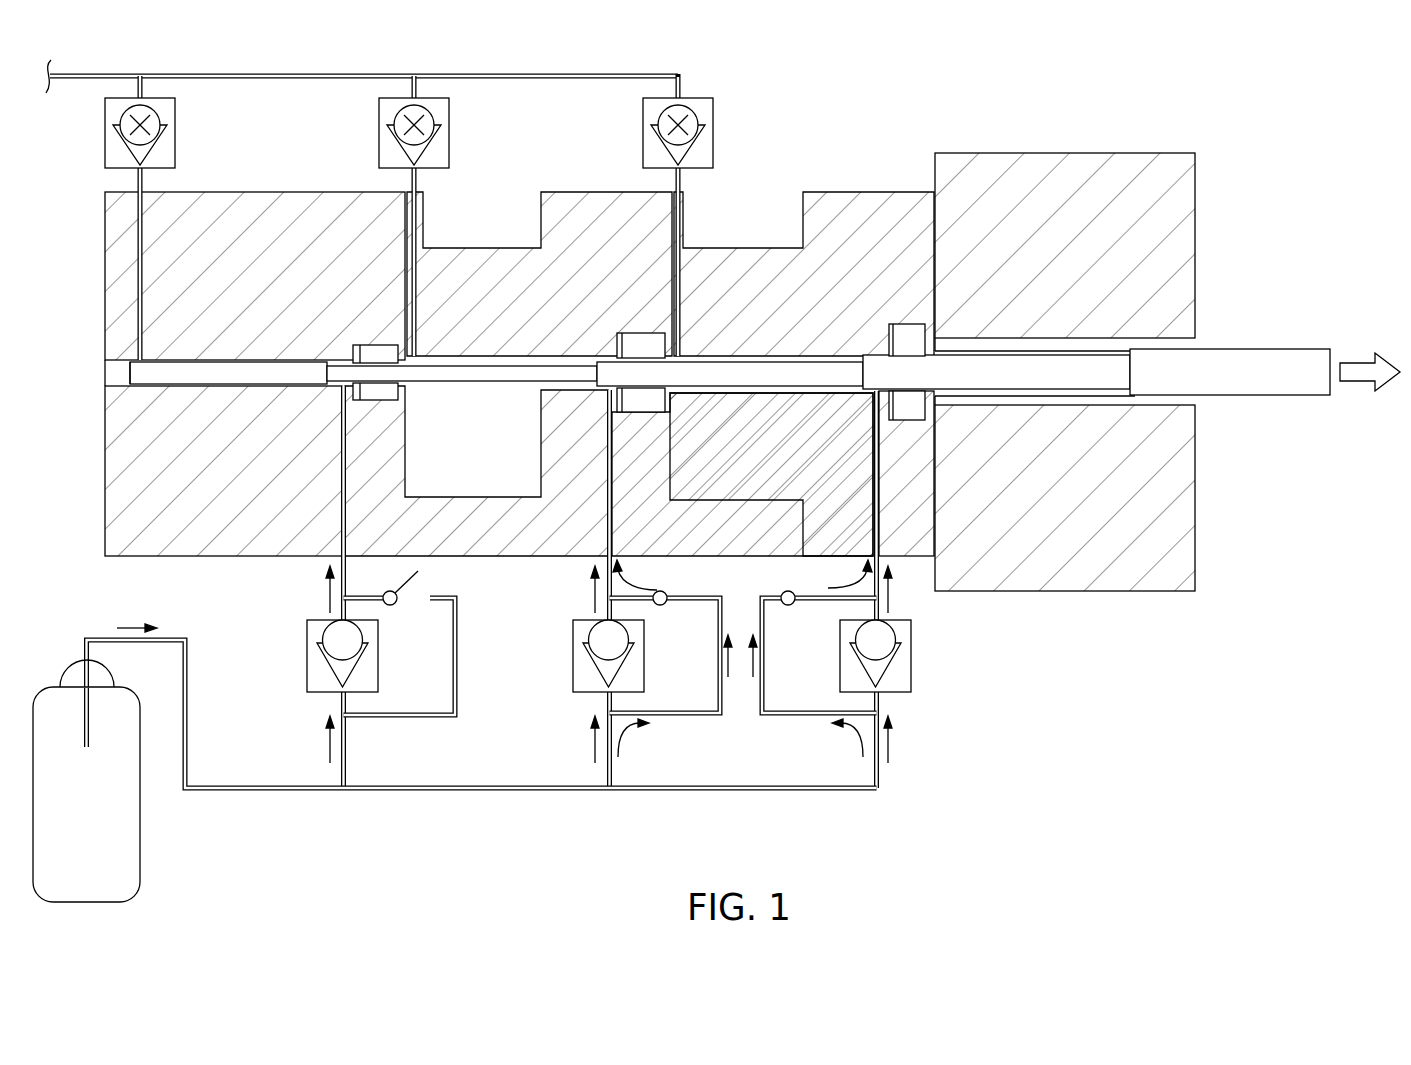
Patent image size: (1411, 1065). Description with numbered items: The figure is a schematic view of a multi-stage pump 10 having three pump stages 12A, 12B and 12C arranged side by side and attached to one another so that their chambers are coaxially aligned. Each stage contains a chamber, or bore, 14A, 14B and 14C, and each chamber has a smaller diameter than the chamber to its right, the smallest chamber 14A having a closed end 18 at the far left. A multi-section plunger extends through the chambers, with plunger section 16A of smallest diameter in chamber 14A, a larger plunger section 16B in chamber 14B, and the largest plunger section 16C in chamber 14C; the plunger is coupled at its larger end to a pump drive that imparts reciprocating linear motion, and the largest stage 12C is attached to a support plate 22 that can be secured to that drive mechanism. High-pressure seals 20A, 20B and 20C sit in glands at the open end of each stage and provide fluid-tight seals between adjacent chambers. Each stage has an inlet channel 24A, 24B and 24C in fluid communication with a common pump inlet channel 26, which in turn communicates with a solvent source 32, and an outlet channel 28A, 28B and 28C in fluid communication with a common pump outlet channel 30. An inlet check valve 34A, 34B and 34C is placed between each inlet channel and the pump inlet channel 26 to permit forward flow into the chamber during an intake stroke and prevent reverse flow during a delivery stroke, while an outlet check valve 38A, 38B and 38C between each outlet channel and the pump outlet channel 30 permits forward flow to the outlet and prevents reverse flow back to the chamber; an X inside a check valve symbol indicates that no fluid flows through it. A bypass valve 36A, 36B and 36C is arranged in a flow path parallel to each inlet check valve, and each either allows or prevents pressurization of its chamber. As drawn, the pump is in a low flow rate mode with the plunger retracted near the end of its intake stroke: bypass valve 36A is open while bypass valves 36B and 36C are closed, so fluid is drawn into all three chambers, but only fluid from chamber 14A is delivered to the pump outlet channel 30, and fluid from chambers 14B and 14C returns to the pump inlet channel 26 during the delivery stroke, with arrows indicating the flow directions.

The multi-stage pump 10 is at (1156, 92).
The first pump stage 12A is at (293, 297).
The second pump stage 12B is at (563, 297).
The third pump stage 12C is at (788, 297).
The first chamber 14A is at (128, 381).
The second chamber 14B is at (463, 364).
The third chamber 14C is at (738, 360).
The first plunger section 16A is at (342, 370).
The second plunger section 16B is at (605, 370).
The third plunger section 16C is at (877, 366).
The closed end 18 is at (128, 366).
The first high-pressure seal 20A is at (378, 401).
The second high-pressure seal 20B is at (642, 401).
The third high-pressure seal 20C is at (907, 406).
The support plate 22 is at (1043, 269).
The first inlet channel 24A is at (342, 487).
The second inlet channel 24B is at (608, 487).
The third inlet channel 24C is at (873, 487).
The pump inlet channel 26 is at (260, 791).
The first outlet channel 28A is at (142, 231).
The second outlet channel 28B is at (417, 232).
The third outlet channel 28C is at (681, 232).
The pump outlet channel 30 is at (97, 72).
The solvent source 32 is at (72, 811).
The first inlet check valve 34A is at (307, 655).
The second inlet check valve 34B is at (573, 655).
The third inlet check valve 34C is at (911, 655).
The first bypass valve 36A is at (392, 606).
The second bypass valve 36B is at (662, 606).
The third bypass valve 36C is at (790, 606).
The first outlet check valve 38A is at (176, 134).
The second outlet check valve 38B is at (450, 134).
The third outlet check valve 38C is at (714, 134).